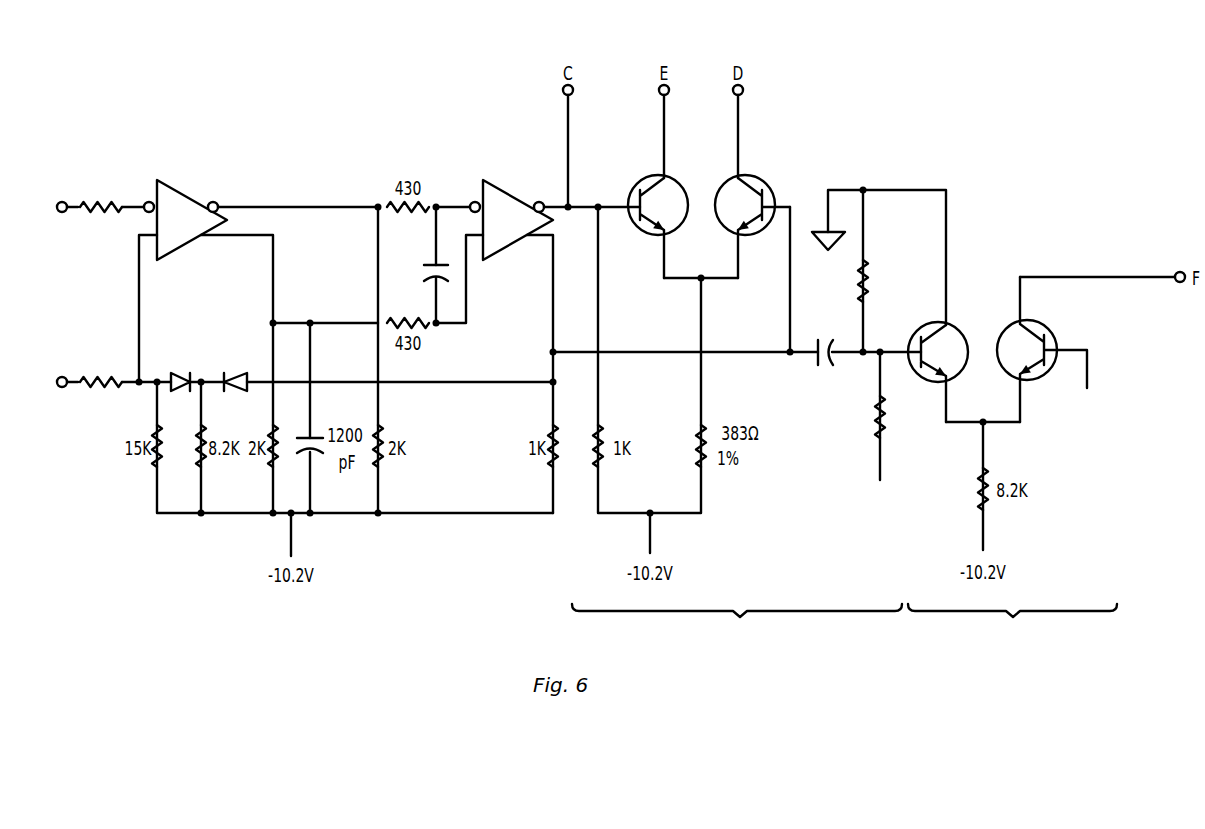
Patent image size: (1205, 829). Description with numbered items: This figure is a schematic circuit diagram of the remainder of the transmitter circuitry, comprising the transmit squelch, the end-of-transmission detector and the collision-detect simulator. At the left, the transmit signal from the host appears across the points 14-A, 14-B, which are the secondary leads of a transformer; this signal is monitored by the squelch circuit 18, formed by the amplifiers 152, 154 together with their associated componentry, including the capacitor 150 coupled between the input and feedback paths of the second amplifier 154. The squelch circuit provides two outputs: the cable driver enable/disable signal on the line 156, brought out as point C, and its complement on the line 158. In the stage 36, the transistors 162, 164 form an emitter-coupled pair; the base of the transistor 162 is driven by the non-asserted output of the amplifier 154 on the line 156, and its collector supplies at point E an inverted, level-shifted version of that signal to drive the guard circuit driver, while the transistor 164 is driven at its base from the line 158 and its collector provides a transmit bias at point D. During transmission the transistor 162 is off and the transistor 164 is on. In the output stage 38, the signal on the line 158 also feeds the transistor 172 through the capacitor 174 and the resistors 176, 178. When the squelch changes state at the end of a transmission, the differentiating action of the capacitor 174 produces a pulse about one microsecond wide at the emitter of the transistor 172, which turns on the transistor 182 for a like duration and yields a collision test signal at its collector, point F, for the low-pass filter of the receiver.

The secondary lead of transformer 14-A is at (66, 200).
The secondary lead of transformer 14-B is at (65, 389).
The comparator circuit 18 is at (330, 131).
The differential amplifier stage 36 is at (737, 624).
The output stage 38 is at (1012, 624).
The capacitor 150 is at (421, 265).
The amplifier 152 is at (192, 200).
The amplifier 154 is at (512, 197).
The line 156 is at (580, 205).
The line 158 is at (553, 285).
The transistor 162 is at (683, 189).
The transistor 164 is at (762, 181).
The transistor 172 is at (952, 323).
The capacitor 174 is at (830, 338).
The resistor 176 is at (885, 428).
The resistor 178 is at (858, 280).
The transistor 182 is at (1049, 329).